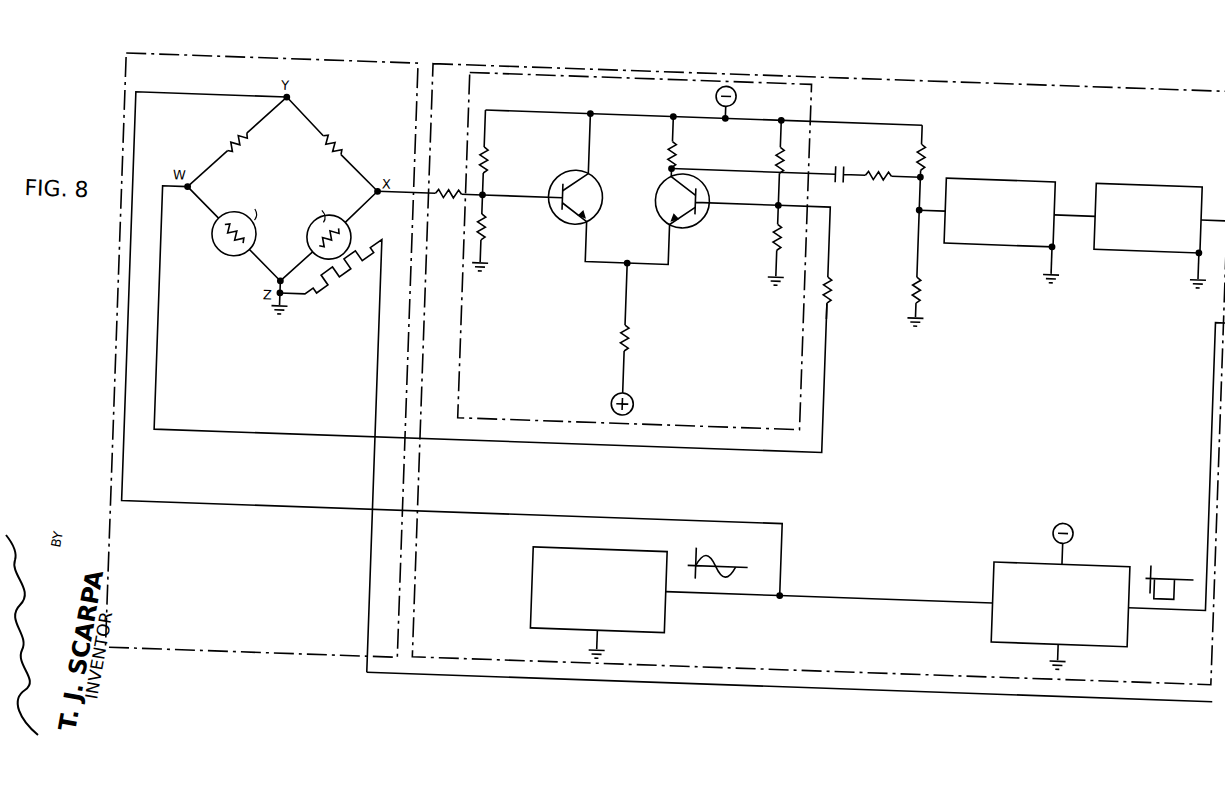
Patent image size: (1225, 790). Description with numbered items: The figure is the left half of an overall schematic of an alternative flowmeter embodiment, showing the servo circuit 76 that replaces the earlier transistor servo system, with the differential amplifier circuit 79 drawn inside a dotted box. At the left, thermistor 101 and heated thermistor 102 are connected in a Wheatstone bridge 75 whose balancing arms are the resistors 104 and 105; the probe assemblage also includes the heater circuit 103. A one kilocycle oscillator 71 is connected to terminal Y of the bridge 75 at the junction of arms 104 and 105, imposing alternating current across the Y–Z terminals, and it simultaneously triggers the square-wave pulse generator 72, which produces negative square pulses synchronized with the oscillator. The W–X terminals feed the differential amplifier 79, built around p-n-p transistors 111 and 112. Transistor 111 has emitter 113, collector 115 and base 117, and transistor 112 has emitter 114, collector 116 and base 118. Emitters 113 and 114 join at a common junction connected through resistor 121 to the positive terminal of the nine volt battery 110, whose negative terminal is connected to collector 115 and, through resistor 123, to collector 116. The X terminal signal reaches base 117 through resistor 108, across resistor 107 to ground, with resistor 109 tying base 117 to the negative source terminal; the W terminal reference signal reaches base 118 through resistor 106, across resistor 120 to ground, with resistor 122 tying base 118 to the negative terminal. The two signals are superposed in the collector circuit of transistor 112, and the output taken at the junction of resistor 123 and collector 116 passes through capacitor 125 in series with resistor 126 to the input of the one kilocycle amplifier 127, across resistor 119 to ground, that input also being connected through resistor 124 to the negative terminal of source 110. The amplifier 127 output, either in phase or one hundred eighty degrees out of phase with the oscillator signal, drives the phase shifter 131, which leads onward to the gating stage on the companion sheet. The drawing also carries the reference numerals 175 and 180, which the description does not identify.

The Wheatstone bridge 75 is at (270, 48).
The servo circuit 76 is at (896, 48).
The differential amplifier circuit 79 is at (815, 78).
The oscillator 71 is at (656, 532).
The square-wave pulse generator 72 is at (1113, 528).
The thermistor 101 is at (233, 241).
The heated thermistor 102 is at (356, 221).
The heater circuit 103 is at (352, 264).
The balancing arm resistor 104 is at (237, 130).
The balancing arm resistor 105 is at (350, 126).
The resistor 106 is at (845, 261).
The resistor 107 is at (496, 211).
The resistor 108 is at (455, 184).
The resistor 109 is at (493, 133).
The nine volt battery 110 is at (624, 381).
The transistor 111 is at (608, 169).
The transistor 112 is at (664, 189).
The emitter electrode 113 is at (585, 200).
The emitter electrode 114 is at (681, 202).
The collector electrode 115 is at (582, 151).
The collector electrode 116 is at (681, 150).
The base electrode 117 is at (565, 175).
The base electrode 118 is at (717, 172).
The resistor 119 is at (938, 258).
The resistor 120 is at (778, 213).
The resistor 121 is at (627, 317).
The resistor 122 is at (779, 123).
The resistor 123 is at (655, 124).
The resistor 124 is at (938, 126).
The capacitor 125 is at (846, 136).
The resistor 126 is at (877, 152).
The one kilocycle amplifier 127 is at (1018, 147).
The phase shifter 131 is at (1143, 147).
The bridge conductor 175 is at (298, 122).
The conductor 180 is at (1156, 661).